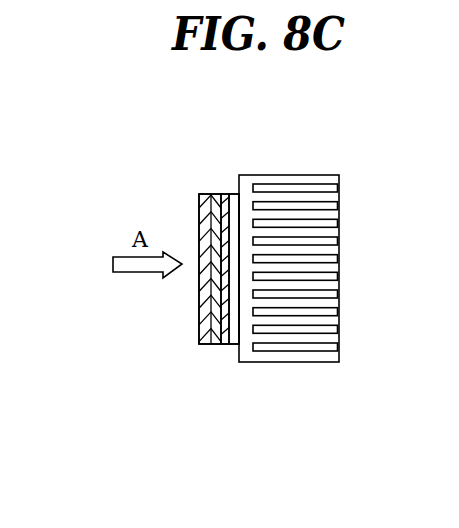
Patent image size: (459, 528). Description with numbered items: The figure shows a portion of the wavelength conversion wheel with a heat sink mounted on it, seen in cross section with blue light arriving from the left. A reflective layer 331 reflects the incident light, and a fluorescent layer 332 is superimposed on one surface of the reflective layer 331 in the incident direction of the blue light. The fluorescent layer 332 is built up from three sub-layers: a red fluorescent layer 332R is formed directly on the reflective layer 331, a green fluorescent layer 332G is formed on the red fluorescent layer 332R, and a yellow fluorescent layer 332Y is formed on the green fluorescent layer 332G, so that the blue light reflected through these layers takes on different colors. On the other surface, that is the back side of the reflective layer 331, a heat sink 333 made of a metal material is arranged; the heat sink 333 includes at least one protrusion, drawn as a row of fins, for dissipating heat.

The reflective layer 331 is at (236, 338).
The fluorescent layer 332 is at (140, 287).
The yellow fluorescent layer 332Y is at (207, 304).
The green fluorescent layer 332G is at (212, 321).
The red fluorescent layer 332R is at (224, 334).
The heat sink 333 is at (330, 374).